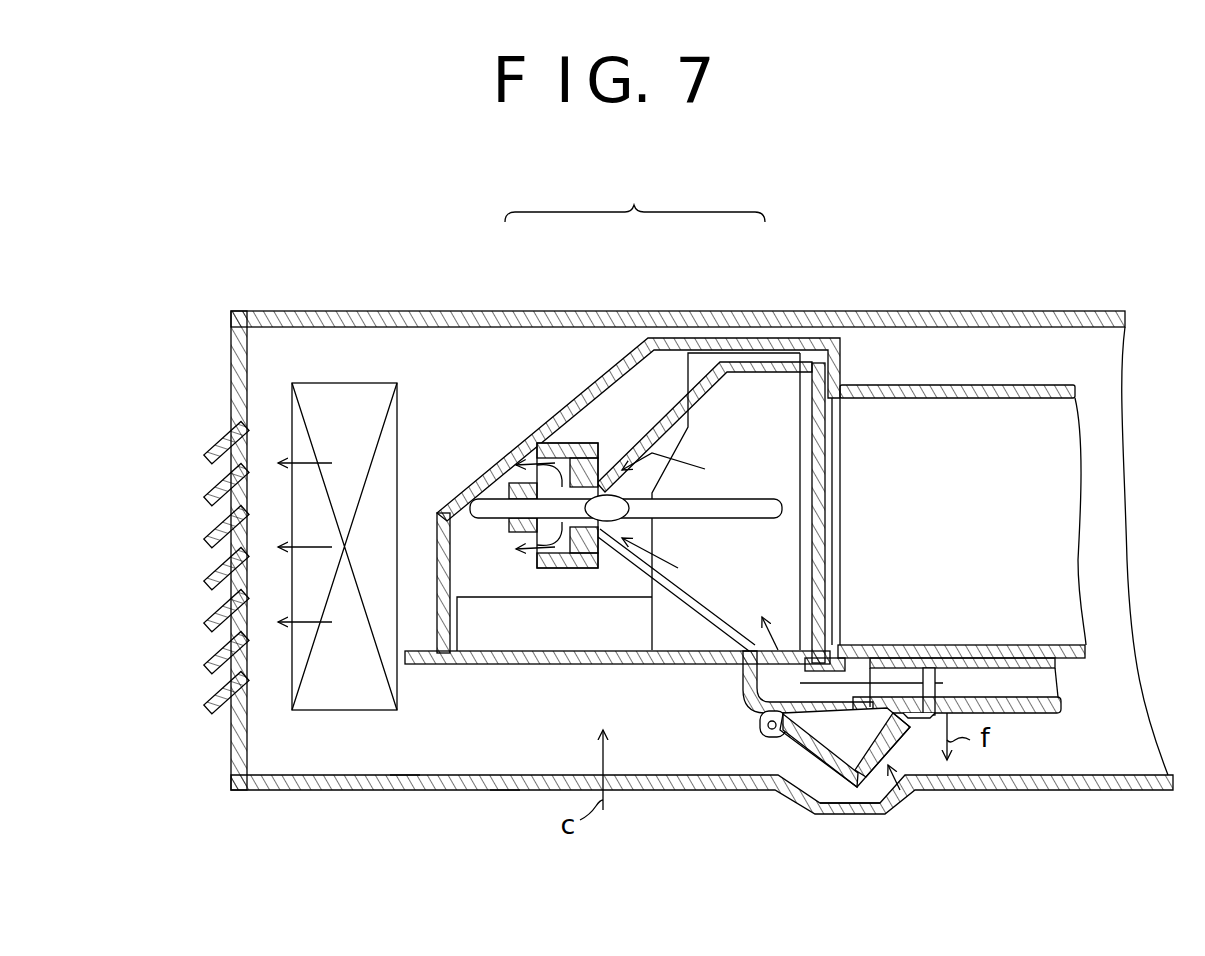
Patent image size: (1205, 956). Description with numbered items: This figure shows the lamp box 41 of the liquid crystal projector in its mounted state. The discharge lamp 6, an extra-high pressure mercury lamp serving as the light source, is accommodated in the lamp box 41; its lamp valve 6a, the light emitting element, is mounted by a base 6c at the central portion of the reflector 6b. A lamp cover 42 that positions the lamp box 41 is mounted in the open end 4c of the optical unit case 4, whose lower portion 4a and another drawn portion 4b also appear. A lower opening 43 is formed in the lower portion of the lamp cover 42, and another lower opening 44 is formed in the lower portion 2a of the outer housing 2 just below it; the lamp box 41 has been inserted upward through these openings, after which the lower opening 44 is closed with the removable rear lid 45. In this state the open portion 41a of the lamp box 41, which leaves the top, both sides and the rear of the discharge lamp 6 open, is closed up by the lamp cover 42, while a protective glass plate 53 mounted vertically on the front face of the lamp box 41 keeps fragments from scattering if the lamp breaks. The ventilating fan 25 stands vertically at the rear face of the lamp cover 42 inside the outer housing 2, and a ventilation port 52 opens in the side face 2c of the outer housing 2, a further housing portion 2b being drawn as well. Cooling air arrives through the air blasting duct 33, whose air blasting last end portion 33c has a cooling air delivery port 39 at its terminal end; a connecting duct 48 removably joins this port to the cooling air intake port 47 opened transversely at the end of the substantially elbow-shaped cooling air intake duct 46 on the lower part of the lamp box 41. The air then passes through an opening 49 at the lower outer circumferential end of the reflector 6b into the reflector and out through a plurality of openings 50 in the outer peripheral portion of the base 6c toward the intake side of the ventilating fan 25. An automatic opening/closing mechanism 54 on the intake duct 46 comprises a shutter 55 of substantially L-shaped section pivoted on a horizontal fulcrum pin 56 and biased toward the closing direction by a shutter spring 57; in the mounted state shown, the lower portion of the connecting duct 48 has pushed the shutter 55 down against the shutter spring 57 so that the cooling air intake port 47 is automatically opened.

The outer housing 2 is at (657, 539).
The lower portion 2a is at (298, 790).
The top wall 2b is at (347, 311).
The side face 2c is at (231, 375).
The optical unit case 4 is at (958, 459).
The lower portion 4a is at (1010, 645).
The duct upper wall 4b is at (937, 385).
The open end 4c is at (840, 433).
The discharge lamp 6 is at (621, 414).
The lamp valve 6a is at (606, 398).
The reflector 6b is at (703, 439).
The base 6c is at (497, 503).
The ventilating fan 25 is at (390, 410).
The air blasting duct 33 is at (1007, 774).
The air blasting last end portion 33c is at (1037, 713).
The cooling air delivery port 39 is at (897, 672).
The lamp box 41 is at (520, 665).
The open portion 41a is at (688, 362).
The lamp cover 42 is at (800, 340).
The lower opening 43 is at (452, 655).
The lower opening 44 is at (403, 790).
The rear lid 45 is at (505, 790).
The cooling air intake duct 46 is at (747, 682).
The cooling air intake port 47 is at (857, 678).
The connecting duct 48 is at (930, 718).
The opening 49 is at (522, 540).
The openings 50 is at (495, 482).
The ventilation port 52 is at (210, 473).
The protective glass plate 53 is at (820, 480).
The automatic opening/closing mechanism 54 is at (917, 727).
The shutter 55 is at (865, 814).
The fulcrum pin 56 is at (767, 725).
The shutter spring 57 is at (765, 740).